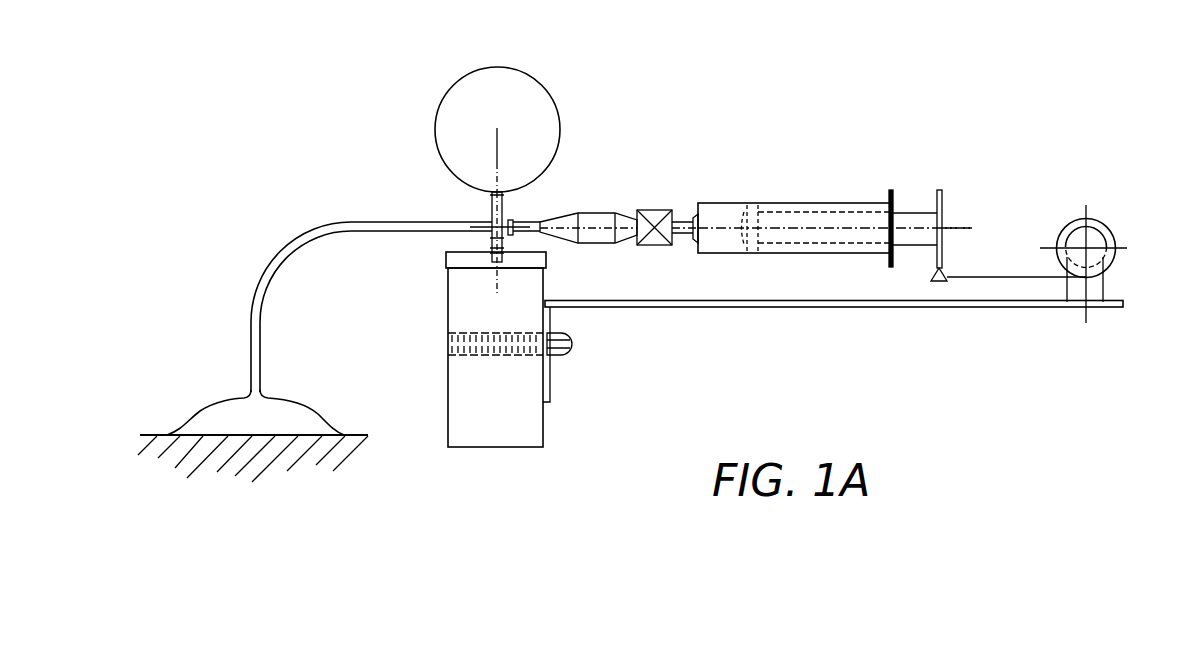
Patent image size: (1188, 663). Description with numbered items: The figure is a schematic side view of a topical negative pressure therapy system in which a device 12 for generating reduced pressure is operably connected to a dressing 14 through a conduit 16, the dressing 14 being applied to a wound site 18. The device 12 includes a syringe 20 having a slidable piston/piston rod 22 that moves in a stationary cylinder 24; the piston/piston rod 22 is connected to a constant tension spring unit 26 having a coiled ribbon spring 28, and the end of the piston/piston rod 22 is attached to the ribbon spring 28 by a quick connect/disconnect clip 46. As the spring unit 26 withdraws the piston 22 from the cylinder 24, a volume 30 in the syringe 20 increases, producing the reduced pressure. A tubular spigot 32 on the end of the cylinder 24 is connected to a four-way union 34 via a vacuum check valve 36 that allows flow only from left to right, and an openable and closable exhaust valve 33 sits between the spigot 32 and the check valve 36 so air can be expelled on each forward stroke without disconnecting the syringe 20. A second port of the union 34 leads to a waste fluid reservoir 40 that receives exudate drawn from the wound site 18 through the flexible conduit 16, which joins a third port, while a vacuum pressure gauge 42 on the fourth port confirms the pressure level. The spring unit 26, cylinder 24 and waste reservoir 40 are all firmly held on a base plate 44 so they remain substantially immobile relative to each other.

The device for generating a reduced pressure 12 is at (948, 183).
The dressing 14 is at (208, 393).
The conduit 16 is at (283, 258).
The wound site 18 is at (275, 465).
The syringe 20 is at (835, 218).
The piston/piston rod 22 is at (908, 222).
The stationary cylinder 24 is at (797, 255).
The constant tension spring unit 26 is at (1110, 217).
The coiled ribbon spring 28 is at (998, 276).
The volume 30 is at (708, 217).
The tubular spigot 32 is at (687, 222).
The exhaust valve 33 is at (652, 245).
The four-way union 34 is at (492, 223).
The vacuum check valve 36 is at (593, 212).
The waste fluid reservoir 40 is at (467, 300).
The vacuum pressure gauge 42 is at (528, 72).
The base plate 44 is at (700, 308).
The quick connect/disconnect clip 46 is at (932, 282).